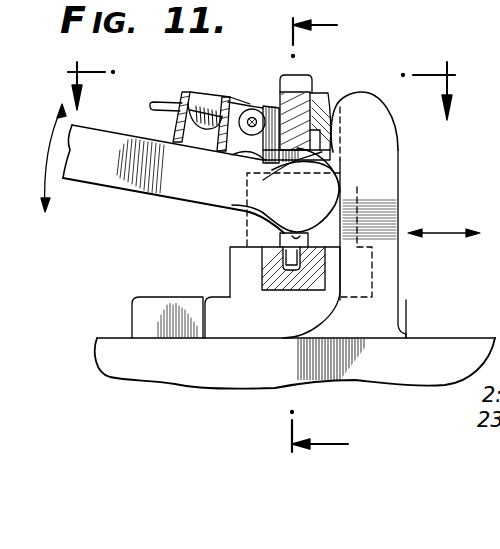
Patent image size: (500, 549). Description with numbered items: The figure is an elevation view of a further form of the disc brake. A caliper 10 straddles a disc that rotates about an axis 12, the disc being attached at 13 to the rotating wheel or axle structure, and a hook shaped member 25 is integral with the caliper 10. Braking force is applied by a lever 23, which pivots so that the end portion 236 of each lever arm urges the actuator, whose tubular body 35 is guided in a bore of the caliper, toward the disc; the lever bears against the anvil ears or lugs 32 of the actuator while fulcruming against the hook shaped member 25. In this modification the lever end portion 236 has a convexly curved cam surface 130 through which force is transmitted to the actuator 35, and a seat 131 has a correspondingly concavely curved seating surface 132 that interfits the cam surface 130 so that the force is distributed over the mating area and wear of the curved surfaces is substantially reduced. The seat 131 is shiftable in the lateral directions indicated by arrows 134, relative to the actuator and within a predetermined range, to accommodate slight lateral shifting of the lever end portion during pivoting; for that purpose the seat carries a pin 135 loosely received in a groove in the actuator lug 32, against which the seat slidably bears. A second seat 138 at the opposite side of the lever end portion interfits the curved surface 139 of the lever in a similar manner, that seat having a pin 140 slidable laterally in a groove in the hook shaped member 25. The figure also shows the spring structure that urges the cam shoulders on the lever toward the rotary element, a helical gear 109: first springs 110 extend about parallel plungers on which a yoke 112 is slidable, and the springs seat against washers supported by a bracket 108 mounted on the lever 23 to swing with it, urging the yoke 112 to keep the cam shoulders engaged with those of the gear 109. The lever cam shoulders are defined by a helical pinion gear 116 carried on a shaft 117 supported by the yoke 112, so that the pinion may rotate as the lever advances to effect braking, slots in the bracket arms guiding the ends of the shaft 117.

The caliper 10 is at (124, 341).
The axis 12 is at (262, 137).
The attachment 13 is at (329, 240).
The lever 23 is at (100, 190).
The hook shaped member 25 is at (293, 97).
The anvil ears or lugs 32 is at (272, 292).
The tubular body 35 is at (236, 287).
The bracket 108 is at (182, 95).
The helical gear 109 is at (265, 147).
The first springs 110 is at (178, 125).
The yoke 112 is at (220, 97).
The helical pinion gear 116 is at (234, 97).
The shaft 117 is at (253, 109).
The convexly curved cam surface 130 is at (338, 191).
The seat 131 is at (250, 248).
The concavely curved seating surface 132 is at (284, 204).
The arrows 134 is at (436, 236).
The pin 135 is at (262, 264).
The second seat 138 is at (373, 93).
The curved surface 139 is at (272, 170).
The pin 140 is at (317, 134).
The cam body 236 is at (340, 173).